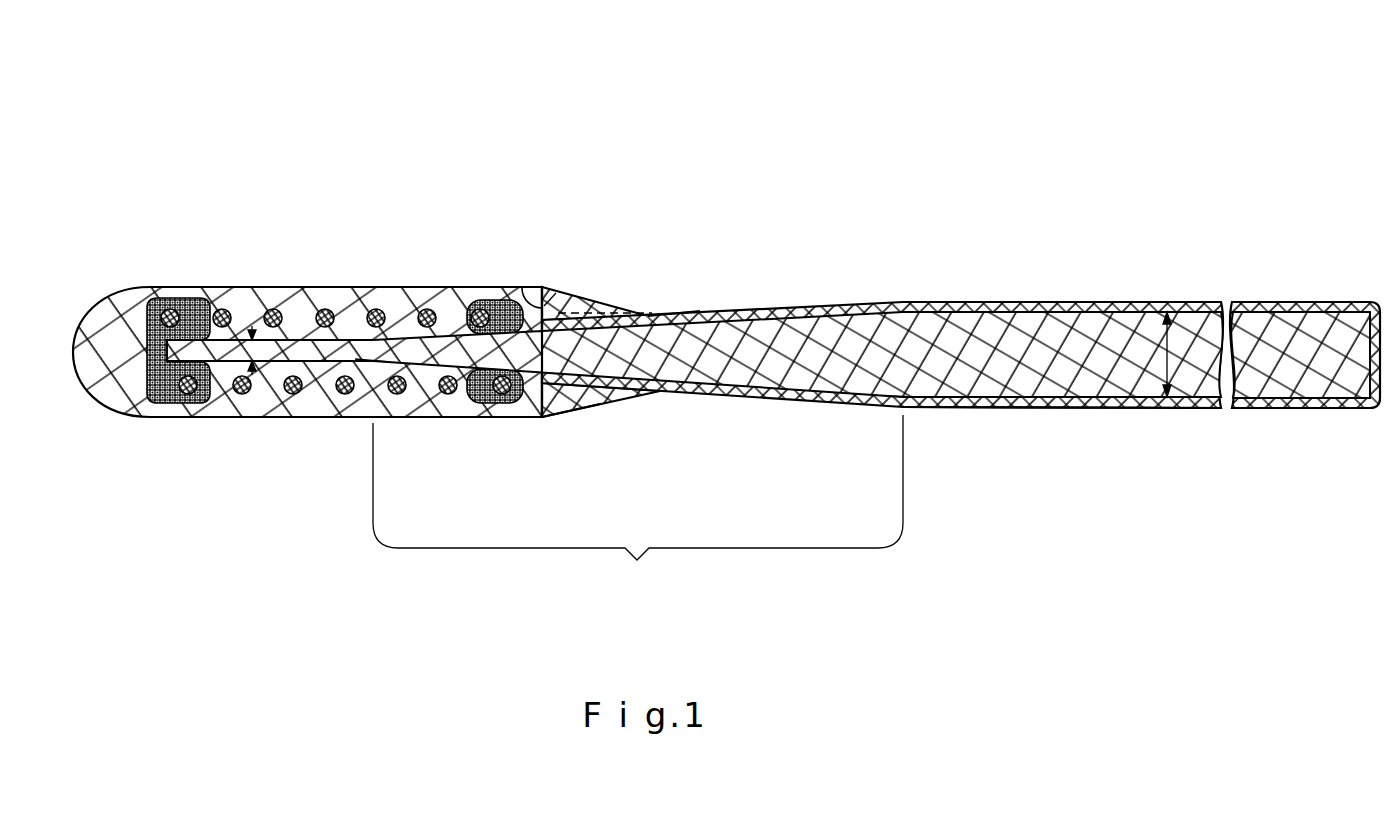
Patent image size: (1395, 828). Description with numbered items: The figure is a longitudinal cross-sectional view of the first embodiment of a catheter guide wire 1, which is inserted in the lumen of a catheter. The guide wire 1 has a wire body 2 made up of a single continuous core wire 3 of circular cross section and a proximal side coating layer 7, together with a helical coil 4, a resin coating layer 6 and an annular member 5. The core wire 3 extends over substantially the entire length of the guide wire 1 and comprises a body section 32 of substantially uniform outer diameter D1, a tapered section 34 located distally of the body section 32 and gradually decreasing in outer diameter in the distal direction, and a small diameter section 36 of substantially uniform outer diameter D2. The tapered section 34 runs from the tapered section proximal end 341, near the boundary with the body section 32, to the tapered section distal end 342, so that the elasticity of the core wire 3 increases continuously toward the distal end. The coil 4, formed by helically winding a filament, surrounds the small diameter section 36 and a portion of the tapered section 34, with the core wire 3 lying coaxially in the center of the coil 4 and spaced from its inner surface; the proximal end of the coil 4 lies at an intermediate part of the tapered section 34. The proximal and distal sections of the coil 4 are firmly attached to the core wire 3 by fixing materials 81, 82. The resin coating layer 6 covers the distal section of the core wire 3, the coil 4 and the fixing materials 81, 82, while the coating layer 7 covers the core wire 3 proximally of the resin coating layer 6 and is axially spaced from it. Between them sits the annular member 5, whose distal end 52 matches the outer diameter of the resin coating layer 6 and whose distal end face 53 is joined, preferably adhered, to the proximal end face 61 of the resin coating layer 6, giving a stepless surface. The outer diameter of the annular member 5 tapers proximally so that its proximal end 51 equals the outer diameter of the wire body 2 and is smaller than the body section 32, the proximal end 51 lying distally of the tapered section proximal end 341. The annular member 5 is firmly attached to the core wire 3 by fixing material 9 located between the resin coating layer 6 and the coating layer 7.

The guide wire 1 is at (1068, 118).
The wire body 2 is at (1075, 301).
The core wire 3 is at (1042, 350).
The body section 32 is at (984, 318).
The tapered section 34 is at (638, 506).
The tapered section proximal end 341 is at (905, 410).
The tapered section distal end 342 is at (372, 385).
The small diameter section 36 is at (309, 335).
The coil 4 is at (425, 305).
The annular member 5 is at (573, 307).
The proximal end 51 is at (673, 308).
The distal end 52 is at (544, 287).
The distal end face 53 is at (518, 296).
The resin coating layer 6 is at (345, 287).
The proximal end face 61 is at (553, 294).
The coating layer 7 is at (1075, 410).
The fixing material 81 is at (495, 303).
The fixing material 82 is at (197, 305).
The fixing material 9 is at (567, 398).
The outer diameter of the body section D1 is at (1170, 345).
The outer diameter of the small diameter section D2 is at (250, 325).